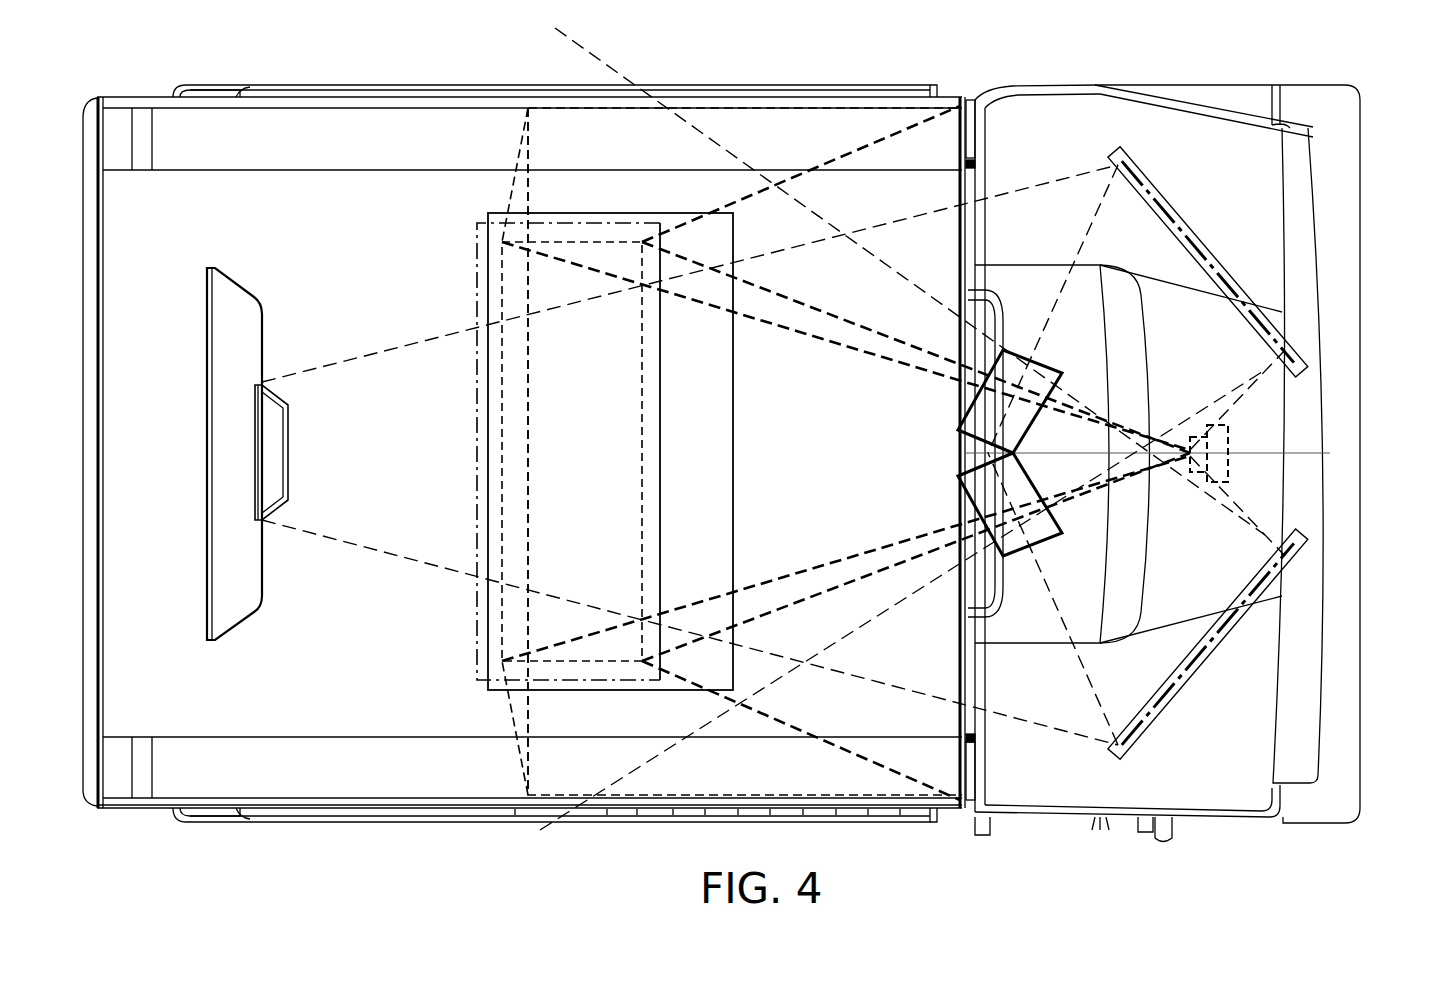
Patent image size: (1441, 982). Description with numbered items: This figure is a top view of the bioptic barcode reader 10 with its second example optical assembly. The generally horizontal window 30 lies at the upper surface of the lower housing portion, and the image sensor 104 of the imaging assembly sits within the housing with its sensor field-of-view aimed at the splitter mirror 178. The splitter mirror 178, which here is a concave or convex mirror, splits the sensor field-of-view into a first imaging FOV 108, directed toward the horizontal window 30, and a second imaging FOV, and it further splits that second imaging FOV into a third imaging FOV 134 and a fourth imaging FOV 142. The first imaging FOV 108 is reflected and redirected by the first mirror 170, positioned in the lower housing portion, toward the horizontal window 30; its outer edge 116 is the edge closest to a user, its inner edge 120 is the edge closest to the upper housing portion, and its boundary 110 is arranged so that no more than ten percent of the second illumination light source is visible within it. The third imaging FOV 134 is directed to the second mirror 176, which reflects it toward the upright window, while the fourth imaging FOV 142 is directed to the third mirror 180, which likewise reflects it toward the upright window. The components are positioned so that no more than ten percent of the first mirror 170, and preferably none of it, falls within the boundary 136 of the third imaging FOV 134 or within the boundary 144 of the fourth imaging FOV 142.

The bioptic barcode reader 10 is at (142, 55).
The horizontal window 30 is at (733, 452).
The image sensor 104 is at (1229, 468).
The first imaging FOV 108 is at (828, 318).
The boundary of first imaging FOV 110 is at (530, 708).
The outer edge of first imaging FOV 116 is at (540, 378).
The inner edge of first imaging FOV 120 is at (978, 163).
The third imaging FOV 134 is at (1090, 232).
The boundary of third imaging FOV 136 is at (360, 348).
The fourth imaging FOV 142 is at (1085, 675).
The boundary of fourth imaging FOV 144 is at (612, 58).
The first mirror 170 is at (475, 240).
The second mirror 176 is at (1172, 192).
The splitter mirror 178 is at (960, 498).
The third mirror 180 is at (1172, 706).